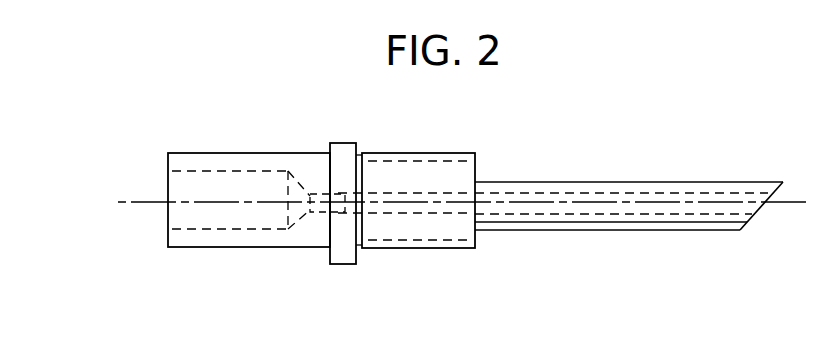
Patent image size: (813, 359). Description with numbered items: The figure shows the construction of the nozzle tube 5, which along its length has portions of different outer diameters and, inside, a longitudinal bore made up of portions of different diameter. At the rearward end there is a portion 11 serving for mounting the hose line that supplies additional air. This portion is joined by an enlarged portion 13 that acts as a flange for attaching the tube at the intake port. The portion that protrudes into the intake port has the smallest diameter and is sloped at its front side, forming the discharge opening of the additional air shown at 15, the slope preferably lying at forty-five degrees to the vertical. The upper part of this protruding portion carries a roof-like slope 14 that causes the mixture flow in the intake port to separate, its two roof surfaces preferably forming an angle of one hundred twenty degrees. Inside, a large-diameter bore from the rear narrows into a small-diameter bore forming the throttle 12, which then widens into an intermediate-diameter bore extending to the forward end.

The nozzle tube 5 is at (550, 230).
The barrel body 11 is at (178, 217).
The throttle 12 is at (318, 207).
The enlarged portion 13 is at (343, 255).
The roof-like slope 14 is at (678, 200).
The sloped front side 15 is at (757, 215).